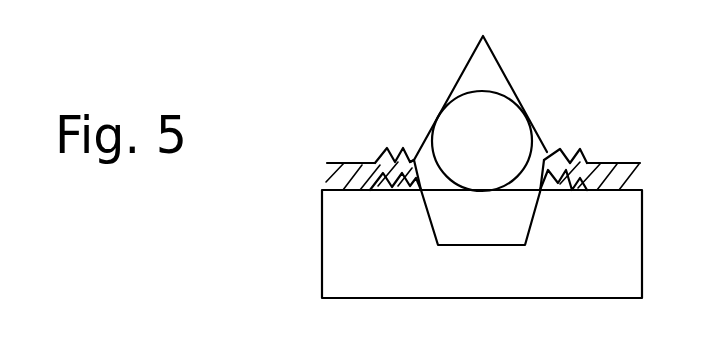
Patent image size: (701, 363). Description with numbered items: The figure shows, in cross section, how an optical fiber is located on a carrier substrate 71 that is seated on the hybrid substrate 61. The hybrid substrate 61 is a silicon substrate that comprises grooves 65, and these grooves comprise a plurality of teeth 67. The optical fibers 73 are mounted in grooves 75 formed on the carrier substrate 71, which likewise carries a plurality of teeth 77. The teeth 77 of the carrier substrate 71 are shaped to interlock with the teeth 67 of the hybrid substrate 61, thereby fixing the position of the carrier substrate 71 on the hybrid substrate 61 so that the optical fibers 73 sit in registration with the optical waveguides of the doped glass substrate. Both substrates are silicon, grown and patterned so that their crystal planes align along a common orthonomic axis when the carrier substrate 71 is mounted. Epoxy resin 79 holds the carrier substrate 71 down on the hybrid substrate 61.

The hybrid substrate 61 is at (322, 281).
The grooves 65 is at (532, 225).
The teeth 67 is at (580, 185).
The carrier substrate 71 is at (430, 112).
The optical fibers 73 is at (500, 127).
The grooves 75 is at (505, 73).
The teeth 77 is at (590, 158).
The epoxy resin 79 is at (327, 182).